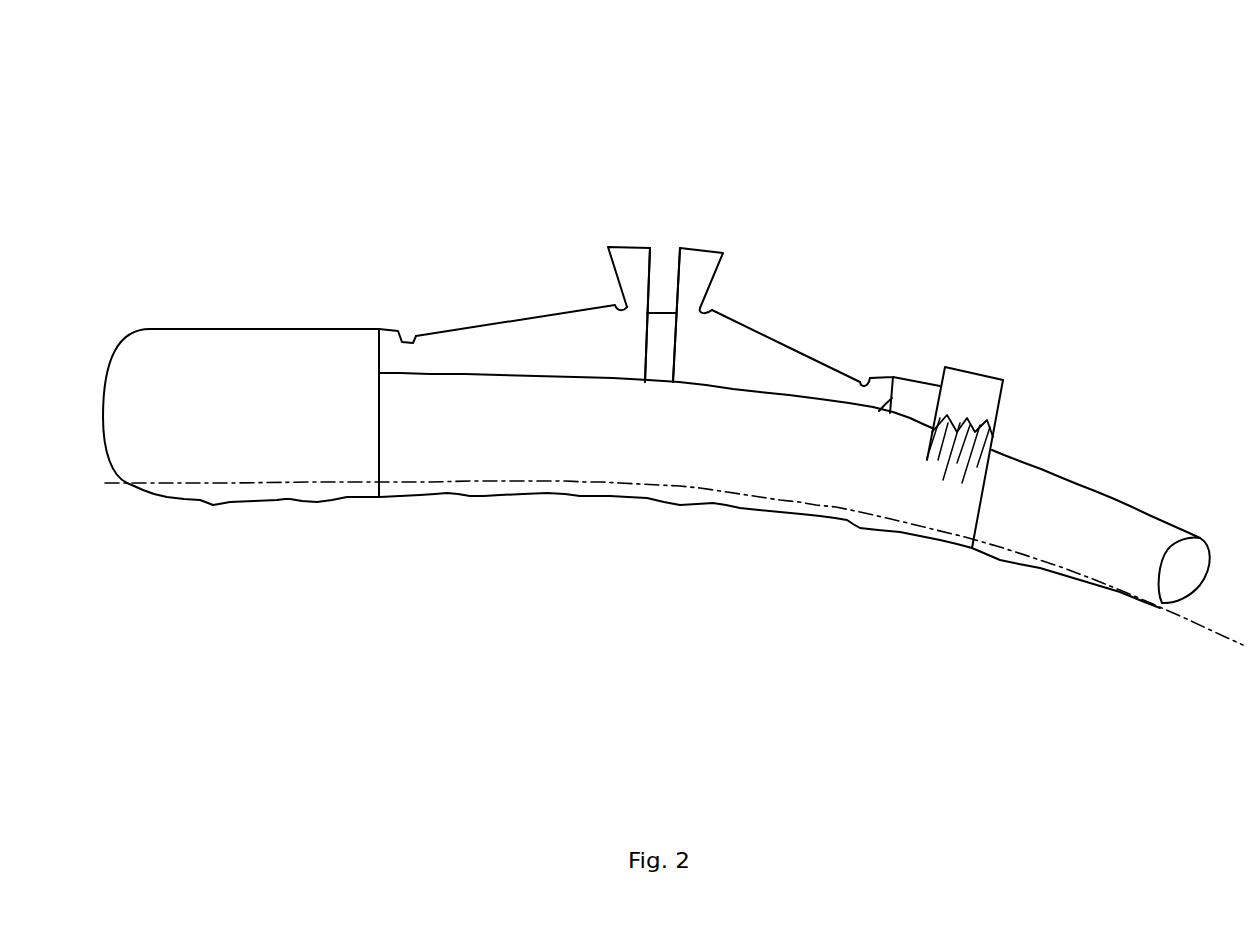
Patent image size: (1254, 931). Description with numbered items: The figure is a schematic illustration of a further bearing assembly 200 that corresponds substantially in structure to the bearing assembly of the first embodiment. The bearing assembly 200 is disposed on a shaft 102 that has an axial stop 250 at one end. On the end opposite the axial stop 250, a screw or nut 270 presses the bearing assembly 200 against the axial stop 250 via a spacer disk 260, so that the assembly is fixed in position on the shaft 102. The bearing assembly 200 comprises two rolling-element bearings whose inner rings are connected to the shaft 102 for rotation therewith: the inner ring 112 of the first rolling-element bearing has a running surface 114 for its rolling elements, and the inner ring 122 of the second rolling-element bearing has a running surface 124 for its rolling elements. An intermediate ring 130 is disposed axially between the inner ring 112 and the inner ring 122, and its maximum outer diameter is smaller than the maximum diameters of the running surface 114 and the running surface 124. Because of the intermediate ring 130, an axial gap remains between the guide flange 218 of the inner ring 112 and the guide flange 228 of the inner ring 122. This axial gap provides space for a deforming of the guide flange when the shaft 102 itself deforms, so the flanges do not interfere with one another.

The bearing assembly 200 is at (683, 100).
The shaft 102 is at (1083, 493).
The axial stop 250 is at (373, 340).
The inner ring 112 is at (438, 355).
The running surface 114 is at (493, 322).
The guide flange 218 is at (630, 255).
The intermediate ring 130 is at (667, 320).
The guide flange 228 is at (697, 258).
The running surface 124 is at (747, 330).
The inner ring 122 is at (797, 363).
The spacer disk 260 is at (910, 387).
The screw or nut 270 is at (975, 382).